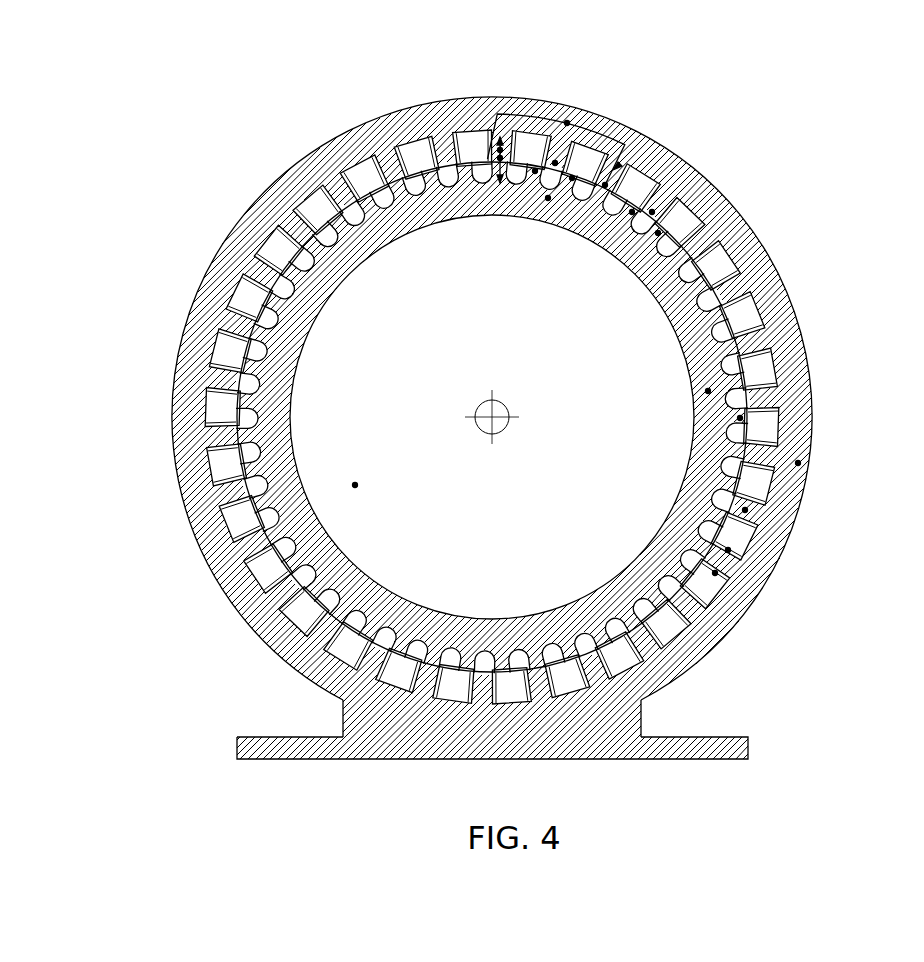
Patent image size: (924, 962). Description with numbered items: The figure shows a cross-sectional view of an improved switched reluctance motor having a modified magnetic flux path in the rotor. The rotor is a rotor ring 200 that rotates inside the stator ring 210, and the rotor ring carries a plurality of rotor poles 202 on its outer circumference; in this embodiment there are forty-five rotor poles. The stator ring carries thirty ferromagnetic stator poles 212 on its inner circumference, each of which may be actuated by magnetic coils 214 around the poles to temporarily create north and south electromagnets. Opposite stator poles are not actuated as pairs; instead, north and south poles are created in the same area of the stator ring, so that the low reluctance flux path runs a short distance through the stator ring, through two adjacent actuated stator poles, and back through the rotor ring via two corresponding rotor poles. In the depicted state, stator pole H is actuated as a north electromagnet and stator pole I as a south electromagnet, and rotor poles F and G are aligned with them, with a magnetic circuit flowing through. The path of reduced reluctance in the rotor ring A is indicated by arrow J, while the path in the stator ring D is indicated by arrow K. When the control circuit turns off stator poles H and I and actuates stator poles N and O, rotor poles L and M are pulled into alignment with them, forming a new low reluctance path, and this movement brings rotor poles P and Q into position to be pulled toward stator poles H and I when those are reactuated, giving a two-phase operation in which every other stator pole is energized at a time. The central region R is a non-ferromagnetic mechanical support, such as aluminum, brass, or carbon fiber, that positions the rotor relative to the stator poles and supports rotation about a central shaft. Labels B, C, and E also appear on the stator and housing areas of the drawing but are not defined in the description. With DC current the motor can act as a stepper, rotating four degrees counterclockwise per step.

The rotor ring 200 is at (373, 590).
The rotor poles 202 is at (497, 660).
The stator ring 210 is at (250, 612).
The stator poles 212 is at (300, 637).
The magnetic coils 214 is at (215, 480).
The central region R is at (355, 485).
The rotor ring A is at (708, 391).
The slot region B is at (740, 418).
The housing outer region C is at (798, 463).
The stator ring D is at (745, 510).
The channel walls E is at (715, 573).
The rotor pole F is at (535, 171).
The rotor pole G is at (605, 185).
The stator pole H is at (500, 150).
The stator pole I is at (615, 169).
The arrow J is at (572, 178).
The arrow K is at (567, 123).
The rotor pole L is at (548, 198).
The rotor pole M is at (658, 233).
The stator pole N is at (555, 163).
The stator pole O is at (652, 212).
The rotor pole P is at (500, 158).
The rotor pole Q is at (632, 212).